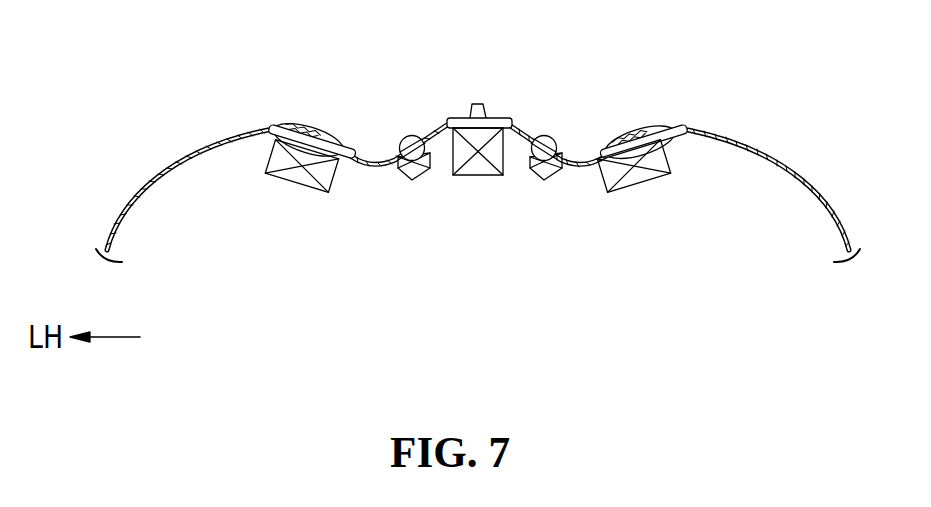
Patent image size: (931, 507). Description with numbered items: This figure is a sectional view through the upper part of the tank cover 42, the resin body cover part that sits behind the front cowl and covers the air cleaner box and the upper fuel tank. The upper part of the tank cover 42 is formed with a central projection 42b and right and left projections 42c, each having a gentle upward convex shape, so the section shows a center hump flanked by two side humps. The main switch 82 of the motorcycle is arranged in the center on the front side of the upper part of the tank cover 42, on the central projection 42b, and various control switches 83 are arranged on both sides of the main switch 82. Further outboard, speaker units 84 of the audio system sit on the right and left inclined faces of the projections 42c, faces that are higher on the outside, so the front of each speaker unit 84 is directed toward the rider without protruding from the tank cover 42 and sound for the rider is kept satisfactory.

The tank cover 42 is at (489, 132).
The central projection 42b is at (525, 127).
The right and left projections 42c is at (230, 129).
The main switch 82 is at (498, 117).
The various control switches 83 is at (401, 136).
The speaker units 84 is at (313, 124).